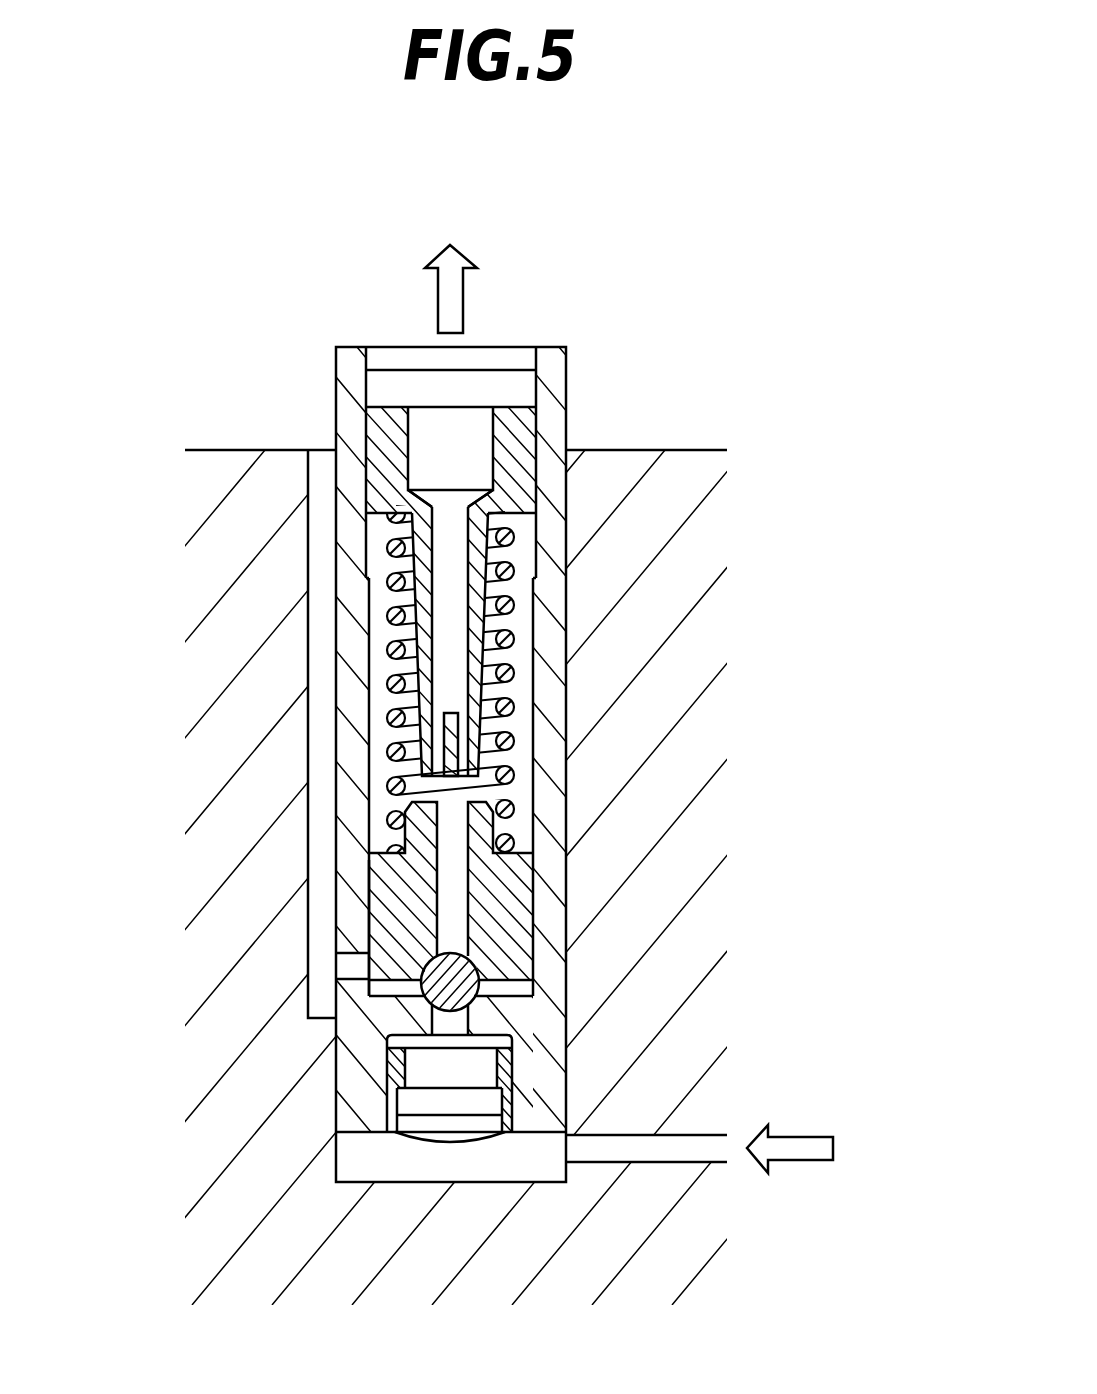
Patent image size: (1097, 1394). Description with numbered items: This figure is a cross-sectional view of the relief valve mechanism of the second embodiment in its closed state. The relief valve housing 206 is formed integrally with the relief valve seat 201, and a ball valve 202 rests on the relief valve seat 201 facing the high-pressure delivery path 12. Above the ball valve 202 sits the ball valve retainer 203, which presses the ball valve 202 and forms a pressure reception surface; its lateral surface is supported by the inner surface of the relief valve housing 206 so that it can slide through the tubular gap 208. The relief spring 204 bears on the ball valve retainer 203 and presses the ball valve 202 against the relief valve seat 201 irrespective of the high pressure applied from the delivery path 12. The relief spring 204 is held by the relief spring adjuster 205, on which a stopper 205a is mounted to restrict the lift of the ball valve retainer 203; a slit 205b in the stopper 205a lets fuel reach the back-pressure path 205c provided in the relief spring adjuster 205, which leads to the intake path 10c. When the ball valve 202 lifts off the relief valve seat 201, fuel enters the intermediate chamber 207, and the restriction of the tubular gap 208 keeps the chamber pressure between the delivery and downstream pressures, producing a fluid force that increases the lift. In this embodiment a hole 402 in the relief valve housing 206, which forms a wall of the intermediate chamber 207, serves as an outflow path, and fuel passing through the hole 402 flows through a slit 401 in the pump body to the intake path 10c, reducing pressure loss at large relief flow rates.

The intake path 10c is at (452, 270).
The delivery path 12 is at (727, 1149).
The relief valve seat 201 is at (474, 998).
The ball valve 202 is at (467, 982).
The ball valve retainer 203 is at (375, 878).
The relief spring 204 is at (505, 708).
The relief spring adjuster 205 is at (547, 433).
The stopper 205a is at (440, 767).
The slit 205b is at (448, 713).
The back-pressure path 205c is at (453, 532).
The relief valve housing 206 is at (548, 587).
The intermediate chamber 207 is at (390, 1032).
The tubular gap 208 is at (373, 922).
The slit 401 is at (323, 953).
The hole 402 is at (362, 968).